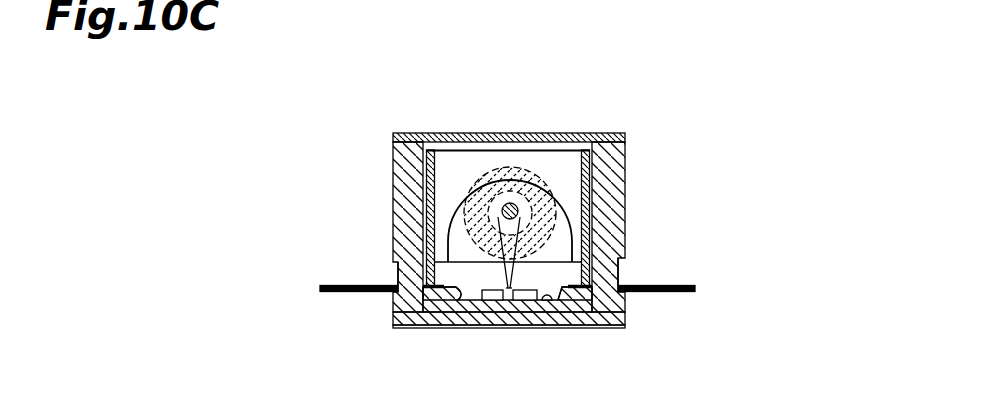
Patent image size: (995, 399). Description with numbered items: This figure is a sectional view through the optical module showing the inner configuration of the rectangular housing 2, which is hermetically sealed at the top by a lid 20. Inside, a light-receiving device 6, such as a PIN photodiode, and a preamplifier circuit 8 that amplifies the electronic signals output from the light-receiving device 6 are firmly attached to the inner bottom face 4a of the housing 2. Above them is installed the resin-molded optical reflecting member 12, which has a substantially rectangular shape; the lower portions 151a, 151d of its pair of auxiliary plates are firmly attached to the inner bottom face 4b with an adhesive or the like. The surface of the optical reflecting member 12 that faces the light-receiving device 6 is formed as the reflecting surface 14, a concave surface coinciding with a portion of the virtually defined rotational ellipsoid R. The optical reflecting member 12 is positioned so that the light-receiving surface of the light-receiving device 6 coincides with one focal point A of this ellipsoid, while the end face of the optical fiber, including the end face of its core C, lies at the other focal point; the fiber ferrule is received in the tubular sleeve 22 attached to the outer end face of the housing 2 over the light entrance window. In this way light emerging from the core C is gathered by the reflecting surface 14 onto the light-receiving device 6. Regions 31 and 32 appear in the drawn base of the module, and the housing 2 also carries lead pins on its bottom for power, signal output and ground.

The rotational ellipsoid R is at (607, 16).
The housing 2 is at (617, 190).
The lid 20 is at (425, 133).
The optical reflecting member 12 is at (473, 160).
The core of the optical fiber C is at (553, 185).
The tubular sleeve 22 is at (515, 176).
The reflecting surface 14 is at (490, 245).
The focal point A is at (510, 288).
The lead frame 31 is at (607, 316).
The inner bottom face 4b is at (463, 300).
The inner bottom face 4a is at (552, 297).
The light-receiving device 6 is at (507, 292).
The preamplifier circuit 8 is at (530, 292).
The base substrate 32 is at (582, 323).
The lower portion of auxiliary plate 151d is at (595, 279).
The lower portion of auxiliary plate 151a is at (421, 284).